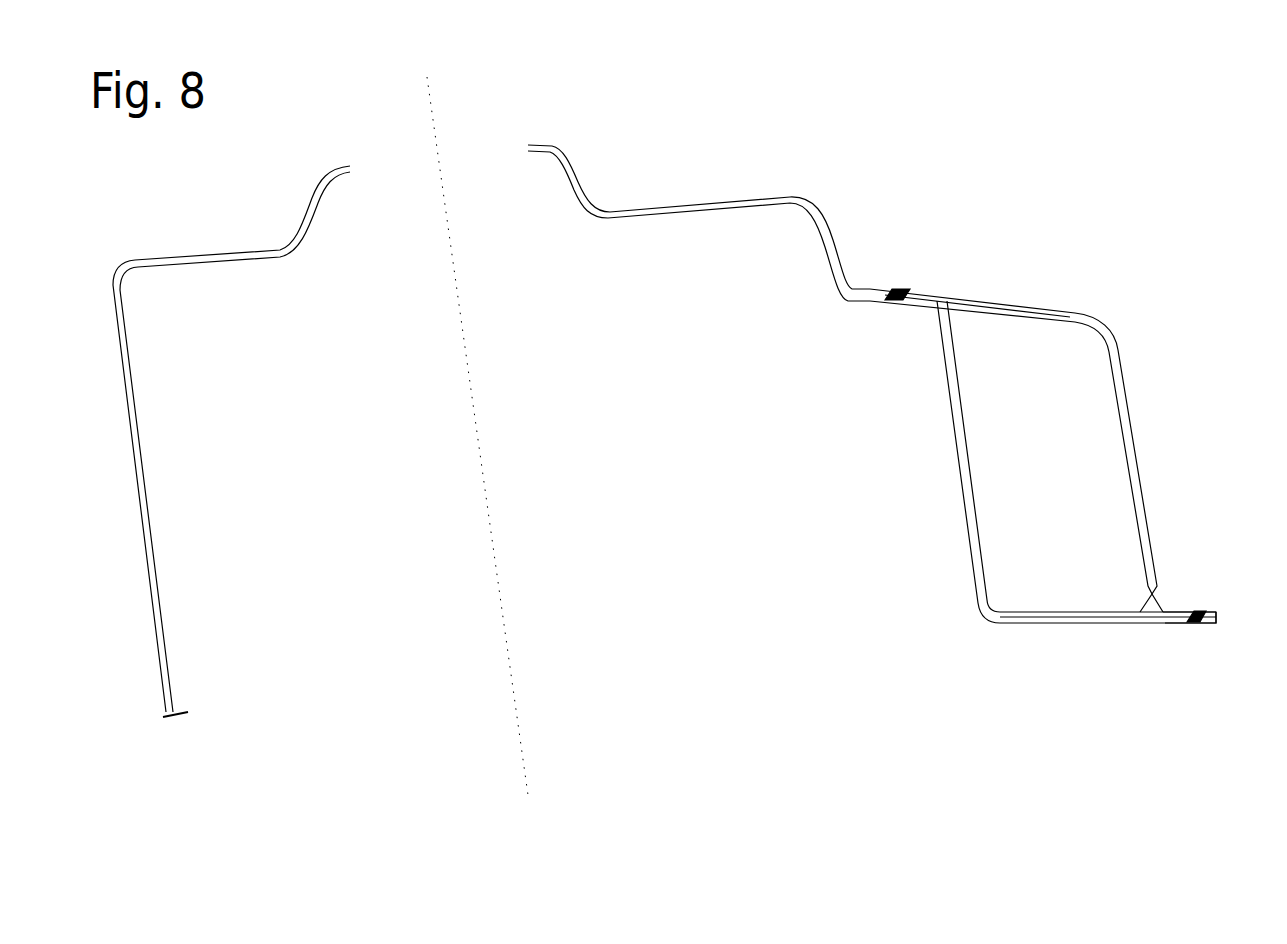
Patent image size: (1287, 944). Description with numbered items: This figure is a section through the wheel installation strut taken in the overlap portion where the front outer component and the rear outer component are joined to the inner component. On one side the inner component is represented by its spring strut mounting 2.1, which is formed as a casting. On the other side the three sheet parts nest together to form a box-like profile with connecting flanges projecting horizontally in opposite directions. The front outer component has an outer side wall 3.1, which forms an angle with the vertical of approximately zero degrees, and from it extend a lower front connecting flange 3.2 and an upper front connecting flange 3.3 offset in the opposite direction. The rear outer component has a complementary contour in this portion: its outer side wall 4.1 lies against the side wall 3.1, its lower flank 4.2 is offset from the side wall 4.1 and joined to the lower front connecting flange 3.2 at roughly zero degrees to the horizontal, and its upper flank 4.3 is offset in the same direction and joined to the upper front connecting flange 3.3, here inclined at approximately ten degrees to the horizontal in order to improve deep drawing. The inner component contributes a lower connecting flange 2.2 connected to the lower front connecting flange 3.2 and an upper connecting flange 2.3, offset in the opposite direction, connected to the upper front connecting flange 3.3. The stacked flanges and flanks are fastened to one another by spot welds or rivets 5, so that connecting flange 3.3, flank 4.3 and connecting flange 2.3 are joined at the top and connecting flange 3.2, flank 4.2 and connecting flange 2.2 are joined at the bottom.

The spring strut mounting 2.1 is at (258, 252).
The lower connecting flange 2.2 is at (1133, 625).
The upper connecting flange 2.3 is at (866, 299).
The outer side wall 3.1 is at (1130, 408).
The lower front connecting flange 3.2 is at (1174, 612).
The upper front connecting flange 3.3 is at (1008, 301).
The outer side wall 4.1 is at (1142, 544).
The lower flank 4.2 is at (1025, 612).
The upper flank 4.3 is at (1040, 315).
The spot welds or rivets 5 is at (905, 295).